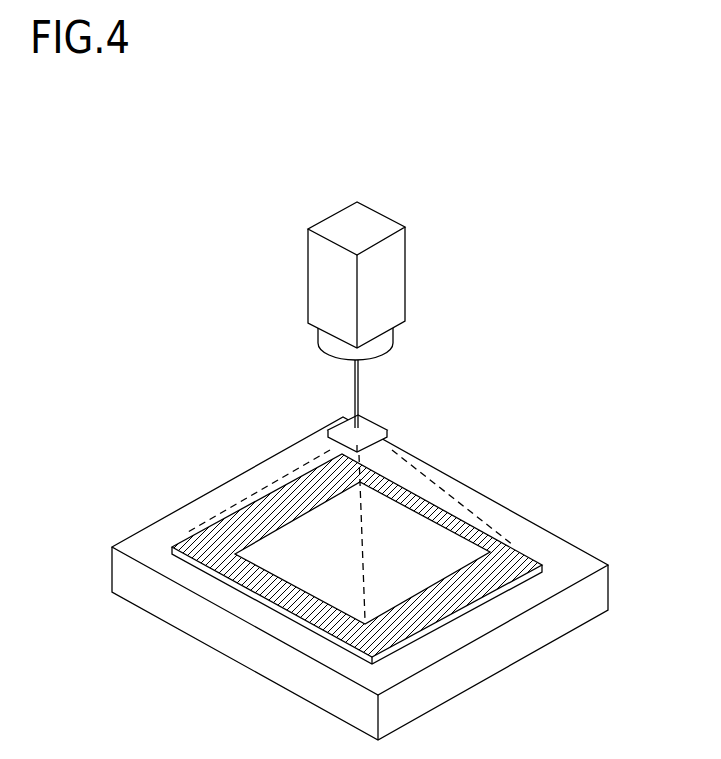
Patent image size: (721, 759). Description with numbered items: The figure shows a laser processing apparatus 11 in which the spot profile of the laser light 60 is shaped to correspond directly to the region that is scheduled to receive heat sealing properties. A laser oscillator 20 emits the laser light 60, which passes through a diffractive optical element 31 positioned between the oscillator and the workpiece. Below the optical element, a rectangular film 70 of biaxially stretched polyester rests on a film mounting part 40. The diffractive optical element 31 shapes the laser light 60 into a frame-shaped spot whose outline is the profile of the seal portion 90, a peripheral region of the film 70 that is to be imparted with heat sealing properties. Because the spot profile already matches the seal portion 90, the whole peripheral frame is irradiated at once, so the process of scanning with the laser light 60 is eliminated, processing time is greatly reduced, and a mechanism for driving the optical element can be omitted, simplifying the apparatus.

The laser processing apparatus 11 is at (123, 92).
The laser oscillator 20 is at (395, 288).
The diffractive optical element 31 is at (368, 413).
The film mounting part 40 is at (606, 592).
The laser light 60 is at (358, 390).
The film 70 is at (300, 584).
The seal portion 90 is at (502, 545).